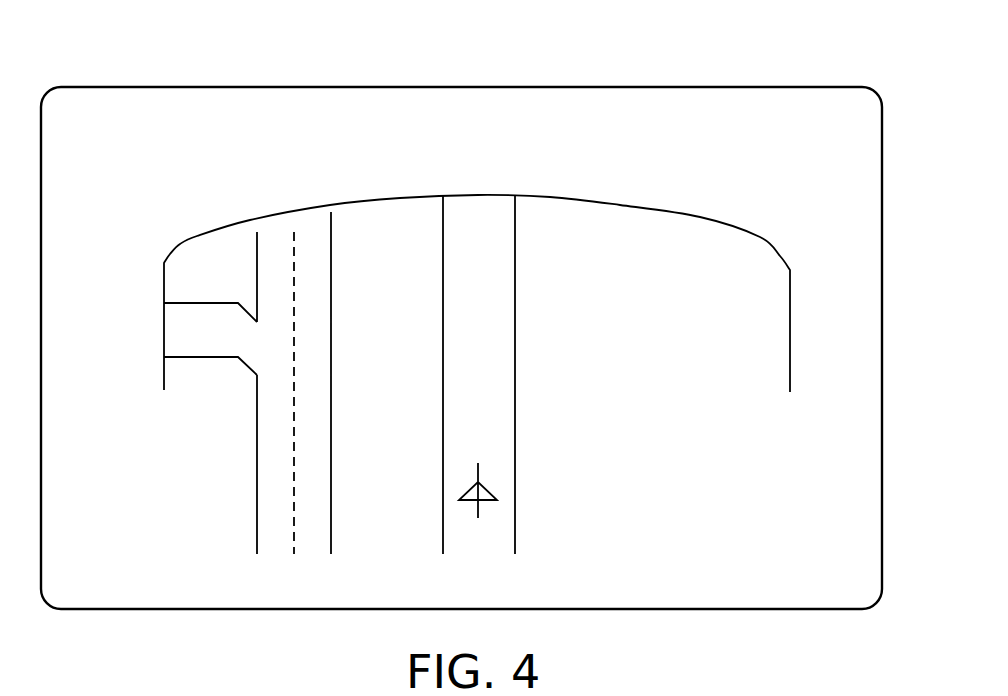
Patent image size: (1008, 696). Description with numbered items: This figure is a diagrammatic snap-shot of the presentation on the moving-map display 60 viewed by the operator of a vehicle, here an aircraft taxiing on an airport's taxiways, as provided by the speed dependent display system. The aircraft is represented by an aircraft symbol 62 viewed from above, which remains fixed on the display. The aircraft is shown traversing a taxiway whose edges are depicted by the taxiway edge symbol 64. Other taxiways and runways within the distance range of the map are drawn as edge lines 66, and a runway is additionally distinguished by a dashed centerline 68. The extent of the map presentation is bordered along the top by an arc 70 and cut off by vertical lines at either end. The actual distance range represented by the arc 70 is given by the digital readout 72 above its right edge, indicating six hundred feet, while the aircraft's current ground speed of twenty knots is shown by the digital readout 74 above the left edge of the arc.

The moving-map display 60 is at (461, 309).
The aircraft symbol 62 is at (535, 514).
The taxiway edge symbol 64 is at (446, 300).
The edge lines 66 is at (255, 478).
The dashed centerline 68 is at (227, 393).
The arc 70 is at (477, 247).
The digital readout 72 is at (747, 168).
The digital readout 74 is at (125, 214).